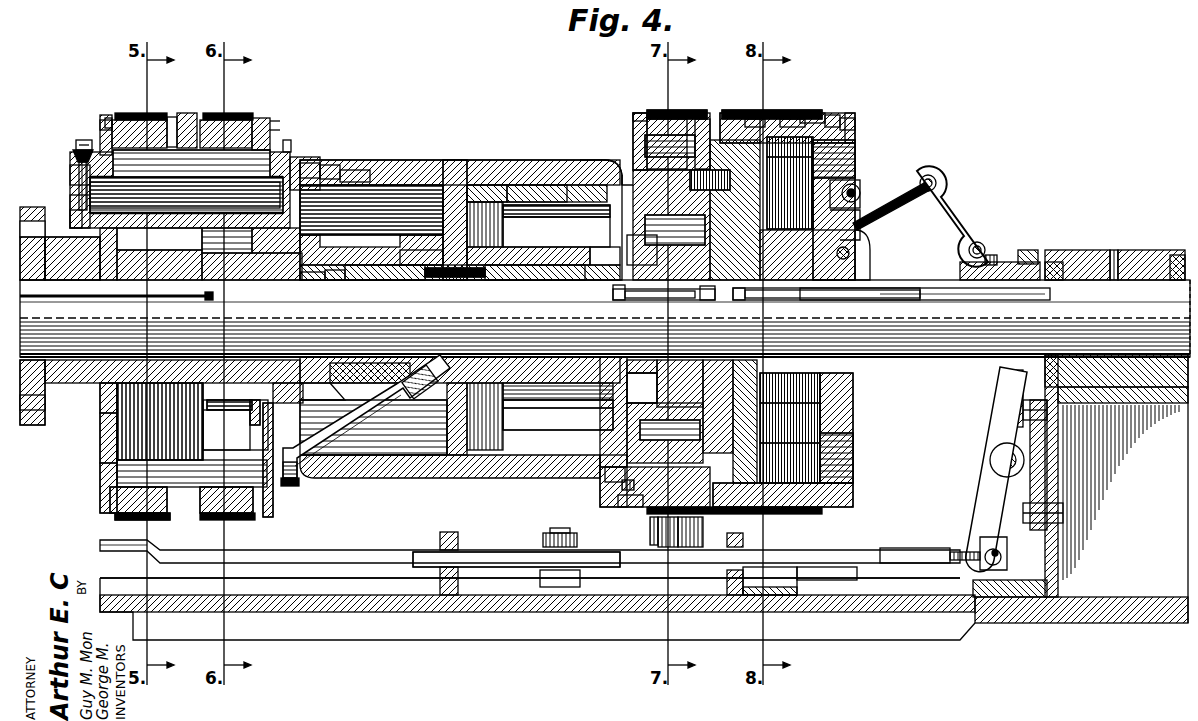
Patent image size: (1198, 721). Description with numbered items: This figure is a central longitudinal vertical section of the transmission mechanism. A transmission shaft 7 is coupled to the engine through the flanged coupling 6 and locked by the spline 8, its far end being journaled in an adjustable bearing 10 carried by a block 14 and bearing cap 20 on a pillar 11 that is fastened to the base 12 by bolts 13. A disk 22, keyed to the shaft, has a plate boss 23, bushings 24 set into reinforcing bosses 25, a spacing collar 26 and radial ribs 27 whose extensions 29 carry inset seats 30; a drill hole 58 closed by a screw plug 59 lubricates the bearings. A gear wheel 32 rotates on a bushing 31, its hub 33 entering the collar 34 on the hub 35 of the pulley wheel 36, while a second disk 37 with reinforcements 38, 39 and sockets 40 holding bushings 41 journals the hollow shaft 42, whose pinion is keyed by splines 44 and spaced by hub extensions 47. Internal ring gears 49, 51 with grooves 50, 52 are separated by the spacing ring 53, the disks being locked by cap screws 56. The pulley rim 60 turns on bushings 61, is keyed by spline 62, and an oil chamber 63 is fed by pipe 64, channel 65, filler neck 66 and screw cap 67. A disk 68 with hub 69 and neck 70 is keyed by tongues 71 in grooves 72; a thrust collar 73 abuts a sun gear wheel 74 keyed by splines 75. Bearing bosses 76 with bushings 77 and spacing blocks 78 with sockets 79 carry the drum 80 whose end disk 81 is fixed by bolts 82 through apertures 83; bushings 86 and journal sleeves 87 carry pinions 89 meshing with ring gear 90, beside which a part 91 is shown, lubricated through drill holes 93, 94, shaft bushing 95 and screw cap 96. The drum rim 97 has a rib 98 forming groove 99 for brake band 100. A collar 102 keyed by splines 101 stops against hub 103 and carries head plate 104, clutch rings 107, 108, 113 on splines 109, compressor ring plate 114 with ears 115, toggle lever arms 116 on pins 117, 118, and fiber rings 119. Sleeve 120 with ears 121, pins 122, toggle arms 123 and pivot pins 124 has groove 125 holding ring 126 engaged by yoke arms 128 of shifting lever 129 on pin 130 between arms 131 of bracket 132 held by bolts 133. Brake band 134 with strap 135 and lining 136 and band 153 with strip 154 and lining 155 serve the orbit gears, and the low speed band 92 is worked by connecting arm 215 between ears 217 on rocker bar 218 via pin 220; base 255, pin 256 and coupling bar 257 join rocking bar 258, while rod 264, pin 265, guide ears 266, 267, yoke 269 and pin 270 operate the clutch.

The flanged coupling 6 is at (78, 205).
The transmission shaft 7 is at (40, 372).
The spline 8 is at (44, 285).
The adjustable bearing 10 is at (1114, 252).
The pillar 11 is at (1040, 493).
The base 12 is at (930, 596).
The bolts 13 is at (975, 583).
The block 14 is at (642, 319).
The bearing cap 20 is at (1150, 252).
The disk 22 is at (104, 124).
The plate boss 23 is at (110, 450).
The bushings 24 is at (78, 175).
The reinforcing bosses 25 is at (72, 220).
The spacing collar 26 is at (105, 398).
The radial ribs 27 is at (118, 430).
The rib extensions 29 is at (230, 443).
The inset seats 30 is at (110, 470).
The bushing 31 is at (305, 283).
The gear wheel 32 is at (222, 410).
The hub 33 is at (330, 283).
The collar 34 is at (320, 400).
The pulley hub 35 is at (418, 283).
The pulley wheel 36 is at (450, 175).
The disk 37 is at (268, 518).
The reinforcement 38 is at (322, 152).
The reinforcement 39 is at (395, 172).
The sockets 40 is at (360, 170).
The bushings 41 is at (345, 150).
The hollow shaft 42 is at (95, 190).
The splines 44 is at (237, 104).
The hub extensions 47 is at (100, 238).
The internal ring gear 49 is at (120, 114).
The peripheral groove 50 is at (112, 118).
The internal ring gear 51 is at (283, 148).
The peripheral band groove 52 is at (240, 113).
The spacing ring 53 is at (190, 120).
The cap screws 56 is at (262, 432).
The drill hole 58 is at (75, 155).
The screw plugs 59 is at (82, 146).
The rim 60 is at (535, 180).
The bushings 61 is at (383, 283).
The spline 62 is at (258, 283).
The oil chamber 63 is at (455, 278).
The pipe 64 is at (380, 405).
The channel 65 is at (420, 400).
The filler neck 66 is at (297, 482).
The screw cap 67 is at (292, 488).
The disk 68 is at (633, 130).
The hub 69 is at (625, 165).
The neck 70 is at (600, 180).
The tongues 71 is at (490, 185).
The grooves 72 is at (560, 190).
The thrust collar 73 is at (590, 283).
The sun gear wheel 74 is at (625, 300).
The splines 75 is at (668, 298).
The bearing bosses 76 is at (632, 507).
The bushings 77 is at (612, 482).
The spacing blocks 78 is at (672, 130).
The threaded end sockets 79 is at (735, 113).
The drum 80 is at (855, 135).
The end disk 81 is at (752, 120).
The bolts 82 is at (790, 120).
The apertures 83 is at (780, 104).
The bushings 86 is at (778, 298).
The journal sleeves 87 is at (607, 470).
The pinions 89 is at (613, 404).
The ring gear 90 is at (702, 130).
The band 91 is at (652, 113).
The band 92 is at (638, 113).
The drill hole 93 is at (613, 422).
The drill hole 94 is at (810, 300).
The shaft bushing 95 is at (708, 300).
The screw cap 96 is at (628, 492).
The rim 97 is at (850, 120).
The circumferential rib 98 is at (850, 125).
The groove 99 is at (835, 120).
The brake band 100 is at (825, 104).
The splines 101 is at (865, 272).
The collar 102 is at (850, 253).
The hub 103 is at (740, 300).
The head plate 104 is at (745, 527).
The clutch ring 107 is at (830, 150).
The clutch ring 108 is at (830, 165).
The splines 109 is at (858, 225).
The clutch ring 113 is at (830, 440).
The compressor ring plate 114 is at (830, 425).
The ears 115 is at (860, 192).
The toggle lever arms 116 is at (926, 176).
The pin 117 is at (852, 242).
The pin 118 is at (858, 205).
The fiber rings 119 is at (830, 455).
The sleeve 120 is at (1008, 262).
The ears 121 is at (991, 255).
The pins 122 is at (978, 240).
The toggle lever arms 123 is at (950, 200).
The pivot pins 124 is at (933, 180).
The annular groove 125 is at (1070, 252).
The ring 126 is at (1030, 252).
The yoke arms 128 is at (1003, 385).
The shifting lever 129 is at (1000, 405).
The pin 130 is at (998, 460).
The arms 131 is at (1000, 470).
The bracket 132 is at (1025, 412).
The bolts 133 is at (1005, 445).
The brake band 134 is at (128, 113).
The metal strap 135 is at (152, 114).
The fibrous lining 136 is at (180, 118).
The band 153 is at (262, 117).
The metal strip 154 is at (272, 121).
The fabric lining 155 is at (274, 130).
The connecting arm 215 is at (678, 548).
The ears 217 is at (650, 548).
The rocker bar 218 is at (328, 551).
The pin 220 is at (650, 538).
The base 255 is at (800, 578).
The upstanding pin 256 is at (773, 566).
The coupling bar 257 is at (800, 566).
The rocking bar 258 is at (530, 573).
The rod 264 is at (485, 555).
The pin 265 is at (985, 540).
The guide ear 266 is at (440, 538).
The guide ear 267 is at (727, 583).
The yoke 269 is at (546, 538).
The pin 270 is at (565, 528).